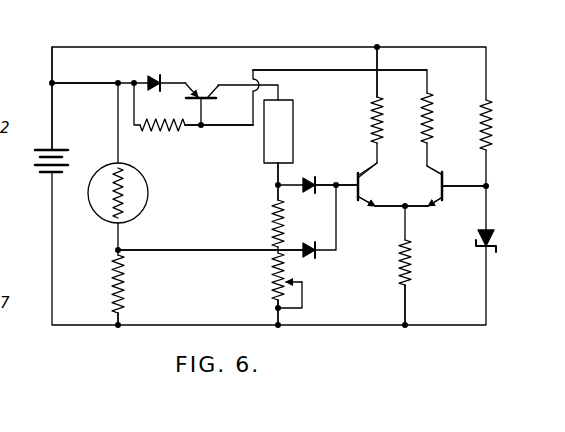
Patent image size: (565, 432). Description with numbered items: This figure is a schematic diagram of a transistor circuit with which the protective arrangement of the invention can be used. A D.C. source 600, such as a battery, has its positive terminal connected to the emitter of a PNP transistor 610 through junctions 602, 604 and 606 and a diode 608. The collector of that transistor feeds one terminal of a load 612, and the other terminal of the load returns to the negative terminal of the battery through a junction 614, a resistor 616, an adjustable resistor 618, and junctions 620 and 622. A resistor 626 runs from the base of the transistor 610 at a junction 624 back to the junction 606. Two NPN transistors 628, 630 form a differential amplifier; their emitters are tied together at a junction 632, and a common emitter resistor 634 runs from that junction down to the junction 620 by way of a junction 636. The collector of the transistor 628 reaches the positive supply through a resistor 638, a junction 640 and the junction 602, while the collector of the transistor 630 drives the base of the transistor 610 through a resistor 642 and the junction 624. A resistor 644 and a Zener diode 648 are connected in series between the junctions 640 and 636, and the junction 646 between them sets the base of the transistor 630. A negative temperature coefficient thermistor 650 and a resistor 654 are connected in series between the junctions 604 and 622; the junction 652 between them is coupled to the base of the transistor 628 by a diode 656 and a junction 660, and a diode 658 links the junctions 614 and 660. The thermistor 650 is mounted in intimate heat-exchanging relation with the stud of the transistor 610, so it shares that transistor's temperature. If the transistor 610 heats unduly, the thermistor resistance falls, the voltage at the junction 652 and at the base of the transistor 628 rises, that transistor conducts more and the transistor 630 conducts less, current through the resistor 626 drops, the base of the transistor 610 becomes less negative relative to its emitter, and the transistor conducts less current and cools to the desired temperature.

The D.C. source 600 is at (78, 142).
The junction 602 is at (52, 83).
The junction 604 is at (118, 83).
The junction 606 is at (134, 80).
The diode 608 is at (164, 78).
The PNP transistor 610 is at (218, 90).
The load 612 is at (268, 164).
The junction 614 is at (278, 185).
The resistor 616 is at (272, 206).
The adjustable resistor 618 is at (270, 292).
The junction 620 is at (278, 328).
The junction 622 is at (118, 327).
The junction 624 is at (202, 128).
The resistor 626 is at (155, 130).
The NPN transistor 628 is at (363, 203).
The NPN transistor 630 is at (448, 203).
The junction 632 is at (432, 204).
The common emitter resistor 634 is at (403, 258).
The junction 636 is at (405, 328).
The resistor 638 is at (374, 106).
The junction 640 is at (377, 47).
The resistor 642 is at (430, 108).
The resistor 644 is at (480, 140).
The junction 646 is at (486, 186).
The Zener diode 648 is at (482, 250).
The negative temperature coefficient thermistor 650 is at (149, 190).
The junction 652 is at (120, 250).
The resistor 654 is at (125, 276).
The diode 656 is at (314, 258).
The diode 658 is at (308, 178).
The junction 660 is at (336, 183).